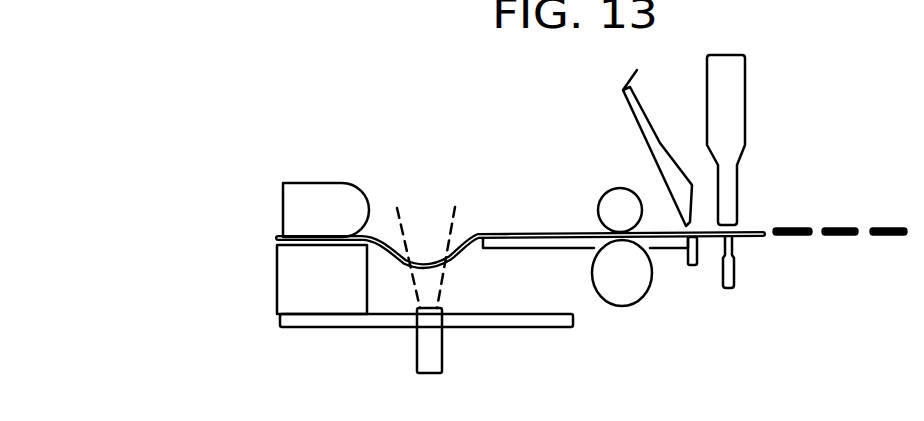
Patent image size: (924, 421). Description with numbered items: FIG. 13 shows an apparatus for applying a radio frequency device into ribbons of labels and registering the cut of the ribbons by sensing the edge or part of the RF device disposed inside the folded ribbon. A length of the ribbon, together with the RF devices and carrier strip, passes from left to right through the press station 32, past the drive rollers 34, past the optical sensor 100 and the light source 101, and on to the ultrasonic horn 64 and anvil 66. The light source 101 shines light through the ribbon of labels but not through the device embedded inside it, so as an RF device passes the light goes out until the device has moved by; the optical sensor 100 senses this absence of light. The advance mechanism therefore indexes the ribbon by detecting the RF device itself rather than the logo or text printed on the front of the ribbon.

The press station 32 is at (302, 183).
The drive rollers 34 is at (605, 190).
The optical sensor 100 is at (658, 142).
The ultrasonic horn 64 is at (745, 97).
The anvil 66 is at (735, 266).
The light source 101 is at (697, 265).